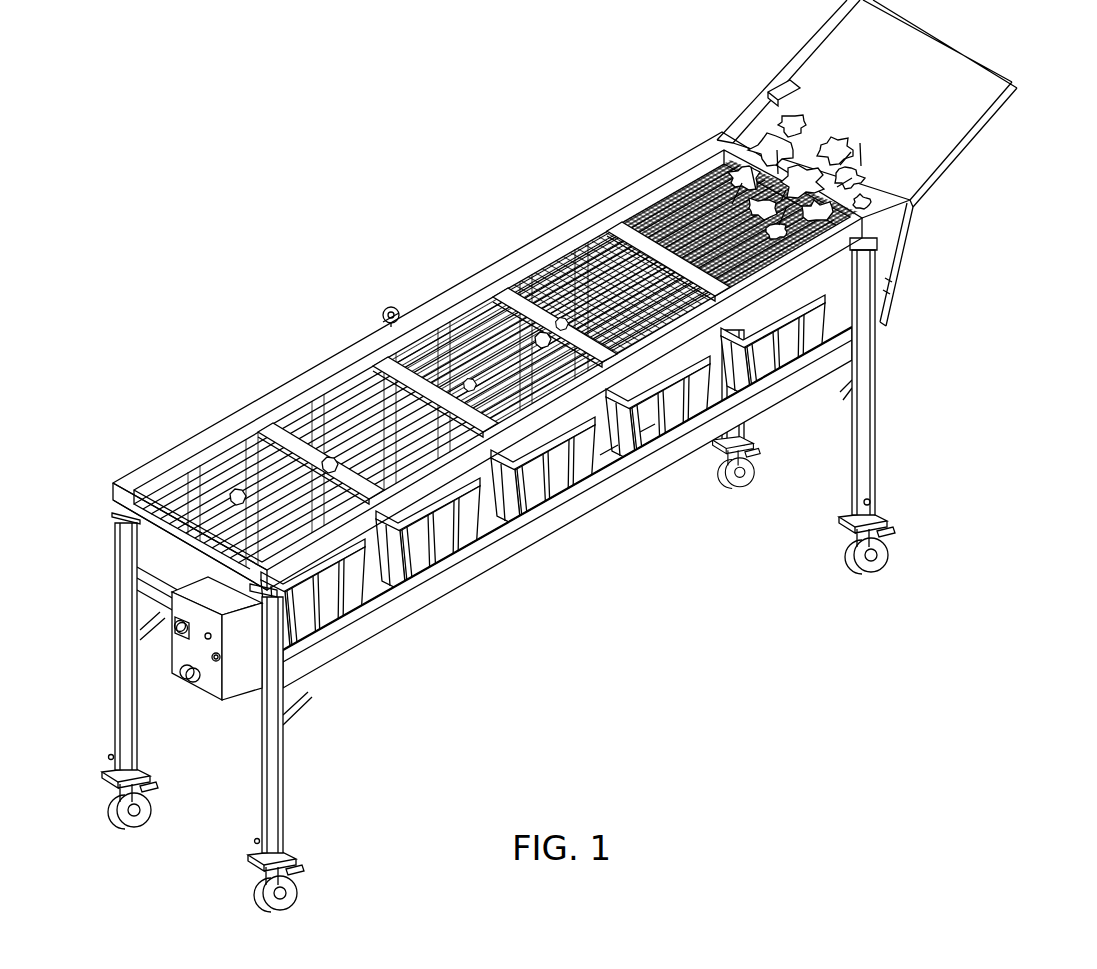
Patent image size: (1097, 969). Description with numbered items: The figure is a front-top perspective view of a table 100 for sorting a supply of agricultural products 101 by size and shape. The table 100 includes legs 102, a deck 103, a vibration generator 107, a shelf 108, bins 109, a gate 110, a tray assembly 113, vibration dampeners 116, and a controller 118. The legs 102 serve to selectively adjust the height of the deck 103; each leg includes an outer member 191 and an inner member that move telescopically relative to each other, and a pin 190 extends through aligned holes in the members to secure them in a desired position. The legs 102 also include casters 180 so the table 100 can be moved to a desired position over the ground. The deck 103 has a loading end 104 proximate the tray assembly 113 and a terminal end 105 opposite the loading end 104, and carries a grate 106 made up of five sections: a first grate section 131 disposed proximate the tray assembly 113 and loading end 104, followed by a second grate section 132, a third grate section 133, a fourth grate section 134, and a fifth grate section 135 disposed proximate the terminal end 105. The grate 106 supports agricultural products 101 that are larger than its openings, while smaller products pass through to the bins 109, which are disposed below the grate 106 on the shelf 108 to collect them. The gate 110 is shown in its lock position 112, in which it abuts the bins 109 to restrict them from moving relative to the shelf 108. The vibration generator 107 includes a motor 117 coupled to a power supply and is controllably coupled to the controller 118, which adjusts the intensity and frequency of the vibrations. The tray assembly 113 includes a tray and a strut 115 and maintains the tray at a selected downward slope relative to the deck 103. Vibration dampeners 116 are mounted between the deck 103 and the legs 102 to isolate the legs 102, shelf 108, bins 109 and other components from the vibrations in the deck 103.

The table 100 is at (469, 118).
The agricultural products 101 is at (823, 108).
The legs 102 is at (527, 575).
The deck 103 is at (500, 334).
The loading end 104 is at (990, 77).
The terminal end 105 is at (442, 348).
The grate 106 is at (500, 336).
The vibration generator 107 is at (384, 316).
The shelf 108 is at (610, 458).
The bin 109 is at (517, 503).
The gate 110 is at (567, 510).
The lock position 112 is at (776, 388).
The tray assembly 113 is at (886, 163).
The strut 115 is at (898, 243).
The vibration dampeners 116 is at (112, 512).
The motor 117 is at (398, 307).
The controller 118 is at (232, 688).
The first grate section 131 is at (693, 182).
The second grate section 132 is at (588, 262).
The third grate section 133 is at (488, 318).
The fourth grate section 134 is at (337, 413).
The fifth grate section 135 is at (228, 474).
The casters 180 is at (884, 553).
The pin 190 is at (871, 503).
The outer member 191 is at (876, 454).